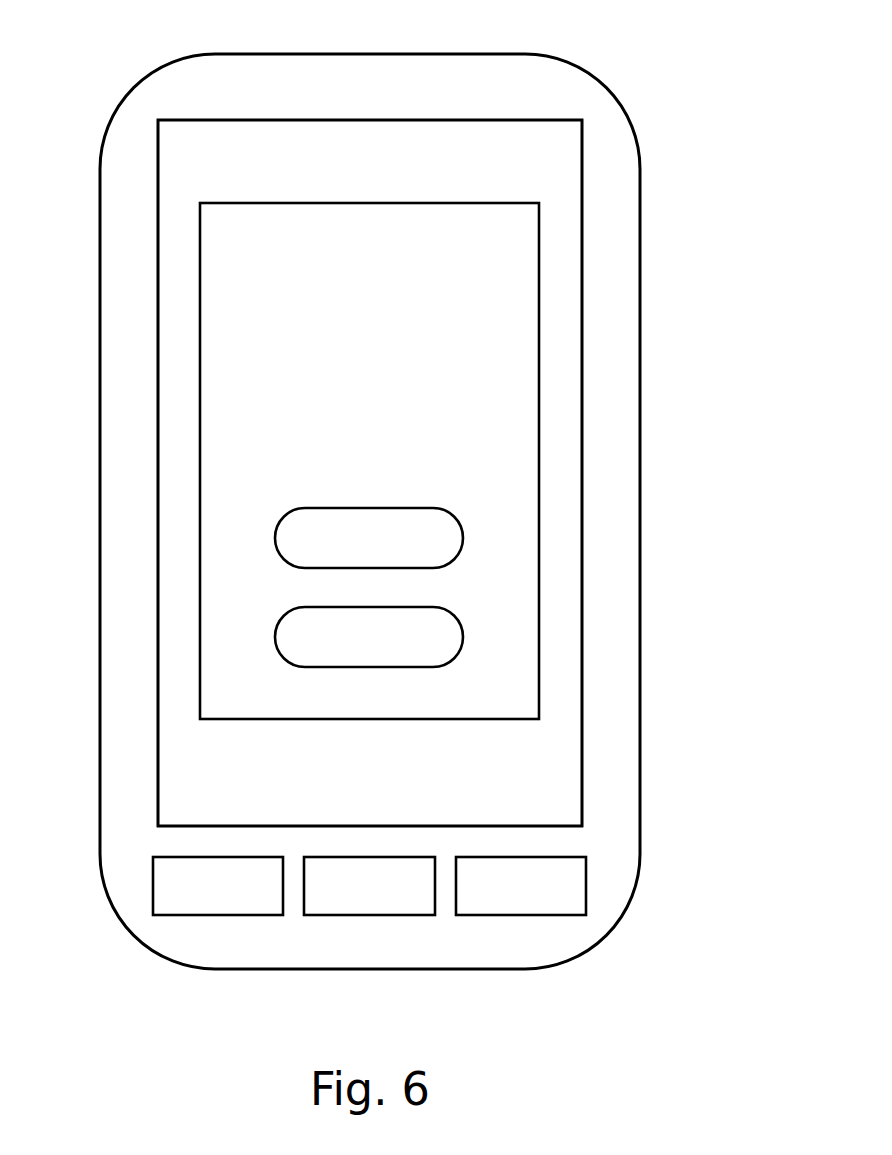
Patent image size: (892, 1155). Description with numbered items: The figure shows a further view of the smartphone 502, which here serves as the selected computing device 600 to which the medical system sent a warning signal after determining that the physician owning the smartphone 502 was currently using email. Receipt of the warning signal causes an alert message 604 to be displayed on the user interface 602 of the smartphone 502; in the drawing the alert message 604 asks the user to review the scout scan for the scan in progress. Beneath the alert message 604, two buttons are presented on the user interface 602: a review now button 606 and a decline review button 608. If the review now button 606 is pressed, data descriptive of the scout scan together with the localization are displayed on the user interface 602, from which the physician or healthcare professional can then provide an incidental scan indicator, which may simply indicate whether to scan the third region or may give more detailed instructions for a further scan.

The selected computing device 600 is at (688, 58).
The smartphone 502 is at (641, 180).
The user interface 602 is at (583, 754).
The alert message 604 is at (540, 280).
The review now button 606 is at (463, 532).
The decline review button 608 is at (463, 630).